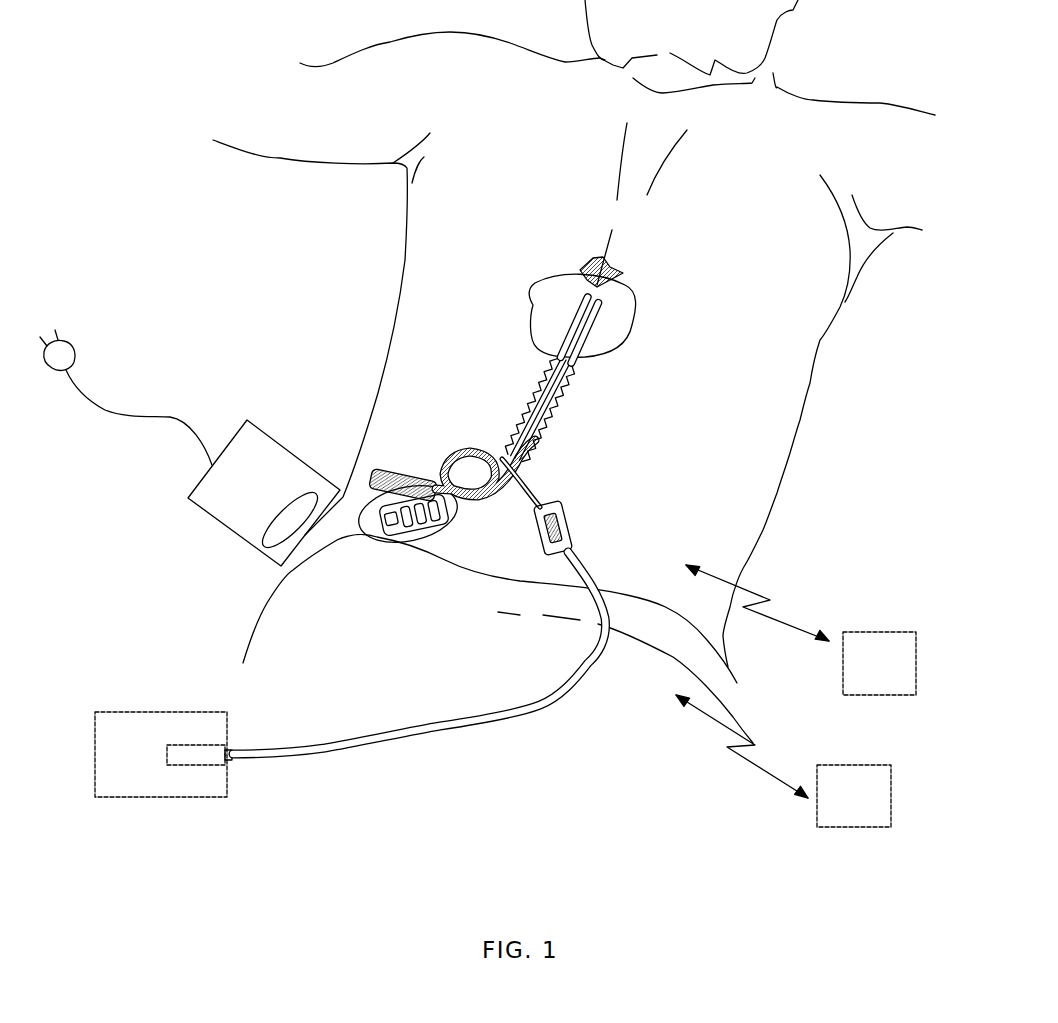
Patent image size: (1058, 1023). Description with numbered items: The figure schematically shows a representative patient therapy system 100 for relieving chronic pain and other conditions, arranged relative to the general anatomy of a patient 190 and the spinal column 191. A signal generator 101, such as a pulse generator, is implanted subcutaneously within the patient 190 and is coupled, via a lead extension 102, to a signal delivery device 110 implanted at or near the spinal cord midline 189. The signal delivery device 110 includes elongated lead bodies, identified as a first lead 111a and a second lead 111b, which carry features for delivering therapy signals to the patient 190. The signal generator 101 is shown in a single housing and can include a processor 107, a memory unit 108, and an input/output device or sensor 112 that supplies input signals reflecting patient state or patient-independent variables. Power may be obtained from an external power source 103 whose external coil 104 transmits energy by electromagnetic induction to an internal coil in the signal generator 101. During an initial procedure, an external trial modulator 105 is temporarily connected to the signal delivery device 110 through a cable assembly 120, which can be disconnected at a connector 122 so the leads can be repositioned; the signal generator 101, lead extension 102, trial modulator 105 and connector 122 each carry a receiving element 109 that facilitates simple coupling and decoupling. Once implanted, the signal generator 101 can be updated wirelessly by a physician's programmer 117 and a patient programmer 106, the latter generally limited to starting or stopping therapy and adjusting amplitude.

The patient therapy system 100 is at (203, 333).
The signal generator 101 is at (453, 512).
The lead extension 102 is at (494, 452).
The external power source 103 is at (264, 425).
The external coil 104 is at (250, 545).
The trial modulator 105 is at (150, 712).
The patient programmer 106 is at (883, 632).
The processor 107 is at (392, 545).
The memory unit 108 is at (454, 572).
The receiving element 109 is at (560, 489).
The signal delivery device 110 is at (581, 268).
The first lead 111a is at (570, 337).
The second lead 111b is at (583, 347).
The input/output device 112 is at (450, 525).
The physician's programmer 117 is at (857, 765).
The cable assembly 120 is at (497, 735).
The connector 122 is at (572, 518).
The spinal cord midline 189 is at (616, 236).
The patient 190 is at (777, 448).
The spinal column 191 is at (579, 406).